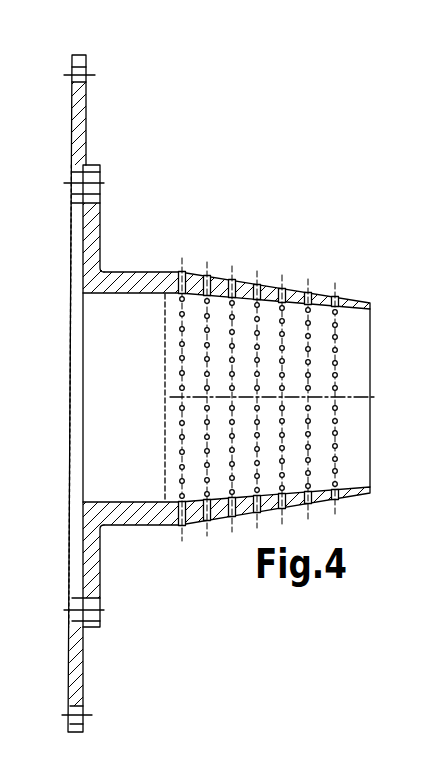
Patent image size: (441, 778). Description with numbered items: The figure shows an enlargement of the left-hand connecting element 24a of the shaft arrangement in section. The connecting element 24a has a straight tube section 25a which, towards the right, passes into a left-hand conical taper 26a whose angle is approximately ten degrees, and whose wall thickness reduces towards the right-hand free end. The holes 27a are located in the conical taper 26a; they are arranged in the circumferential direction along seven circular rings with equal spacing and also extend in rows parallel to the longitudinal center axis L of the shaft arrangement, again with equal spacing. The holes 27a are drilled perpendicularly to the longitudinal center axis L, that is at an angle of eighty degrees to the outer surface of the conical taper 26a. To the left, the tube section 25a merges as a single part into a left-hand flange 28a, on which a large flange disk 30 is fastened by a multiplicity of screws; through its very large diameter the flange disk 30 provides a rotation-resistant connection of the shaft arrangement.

The flange disk 30 is at (87, 92).
The left-hand connecting element 24a is at (184, 141).
The straight tube section 25a is at (130, 270).
The left-hand conical taper 26a is at (268, 285).
The holes 27a is at (250, 282).
The left-hand flange 28a is at (95, 207).
The longitudinal center axis L is at (345, 402).